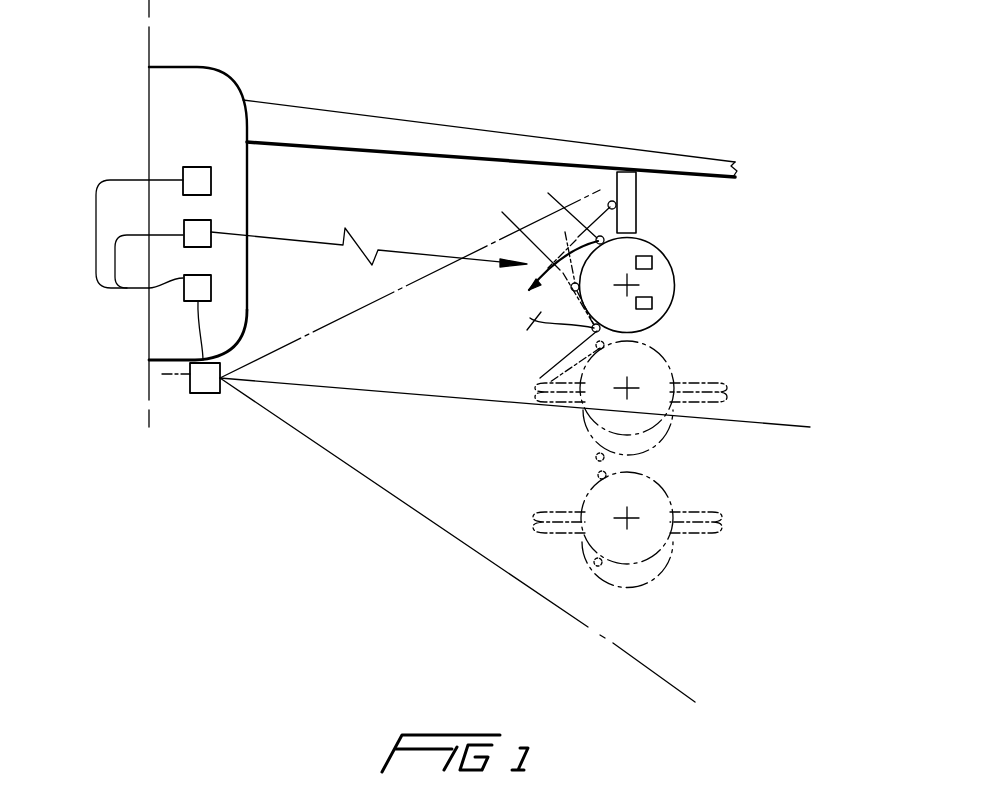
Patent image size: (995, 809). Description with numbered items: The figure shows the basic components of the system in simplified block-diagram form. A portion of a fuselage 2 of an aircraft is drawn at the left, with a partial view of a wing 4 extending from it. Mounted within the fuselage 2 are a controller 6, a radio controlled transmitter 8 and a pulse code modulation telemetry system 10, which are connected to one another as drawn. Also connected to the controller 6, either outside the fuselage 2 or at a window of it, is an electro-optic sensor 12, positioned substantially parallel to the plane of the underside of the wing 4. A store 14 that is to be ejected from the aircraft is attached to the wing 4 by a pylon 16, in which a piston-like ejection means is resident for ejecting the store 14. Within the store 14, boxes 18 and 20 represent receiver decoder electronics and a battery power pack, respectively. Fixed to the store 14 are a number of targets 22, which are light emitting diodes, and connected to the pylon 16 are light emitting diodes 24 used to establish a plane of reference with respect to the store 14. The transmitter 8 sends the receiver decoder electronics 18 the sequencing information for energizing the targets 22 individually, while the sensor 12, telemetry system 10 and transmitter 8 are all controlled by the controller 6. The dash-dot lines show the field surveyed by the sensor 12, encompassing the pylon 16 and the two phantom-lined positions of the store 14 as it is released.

The fuselage 2 is at (183, 67).
The wing 4 is at (638, 149).
The controller 6 is at (149, 288).
The radio controlled transmitter 8 is at (212, 230).
The pulse code modulation telemetry system 10 is at (183, 172).
The electro-optic sensor 12 is at (198, 395).
The store 14 is at (676, 287).
The pylon 16 is at (636, 206).
The receiver decoder electronics 18 is at (652, 262).
The battery power pack 20 is at (652, 303).
The targets 22 is at (571, 288).
The light emitting diodes 24 is at (611, 201).